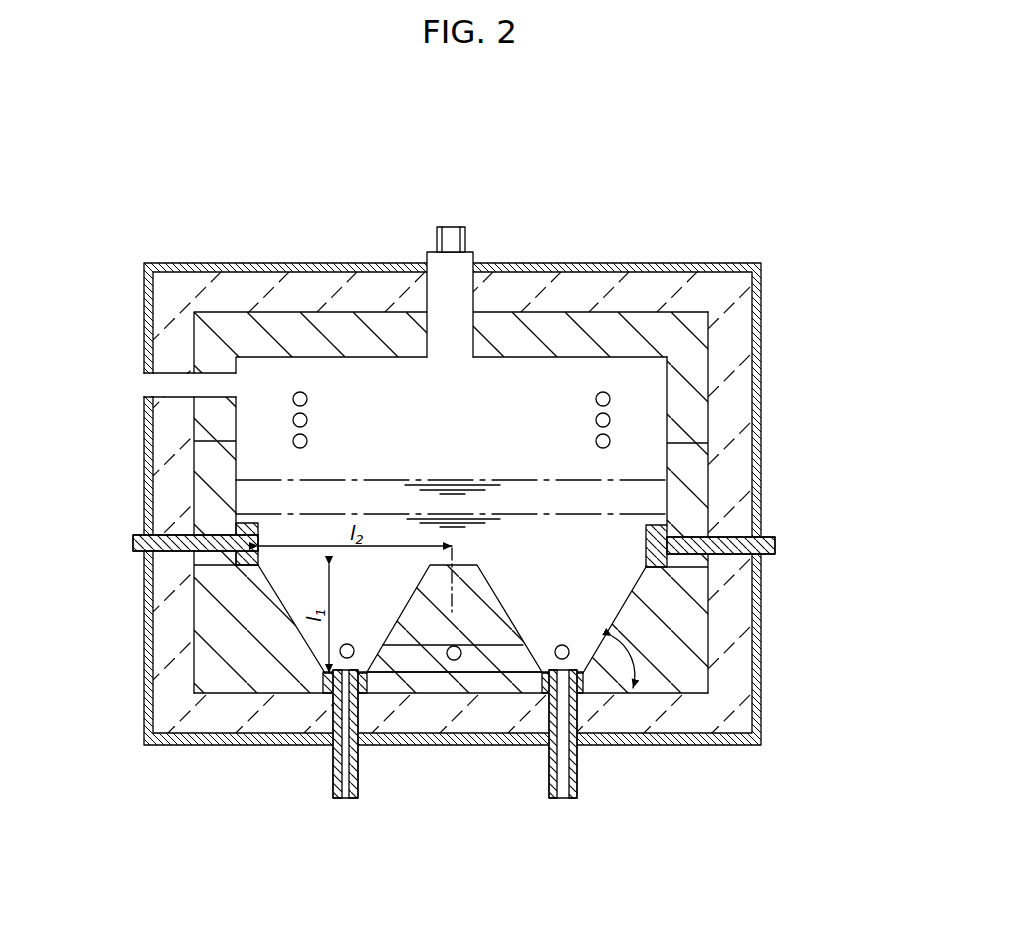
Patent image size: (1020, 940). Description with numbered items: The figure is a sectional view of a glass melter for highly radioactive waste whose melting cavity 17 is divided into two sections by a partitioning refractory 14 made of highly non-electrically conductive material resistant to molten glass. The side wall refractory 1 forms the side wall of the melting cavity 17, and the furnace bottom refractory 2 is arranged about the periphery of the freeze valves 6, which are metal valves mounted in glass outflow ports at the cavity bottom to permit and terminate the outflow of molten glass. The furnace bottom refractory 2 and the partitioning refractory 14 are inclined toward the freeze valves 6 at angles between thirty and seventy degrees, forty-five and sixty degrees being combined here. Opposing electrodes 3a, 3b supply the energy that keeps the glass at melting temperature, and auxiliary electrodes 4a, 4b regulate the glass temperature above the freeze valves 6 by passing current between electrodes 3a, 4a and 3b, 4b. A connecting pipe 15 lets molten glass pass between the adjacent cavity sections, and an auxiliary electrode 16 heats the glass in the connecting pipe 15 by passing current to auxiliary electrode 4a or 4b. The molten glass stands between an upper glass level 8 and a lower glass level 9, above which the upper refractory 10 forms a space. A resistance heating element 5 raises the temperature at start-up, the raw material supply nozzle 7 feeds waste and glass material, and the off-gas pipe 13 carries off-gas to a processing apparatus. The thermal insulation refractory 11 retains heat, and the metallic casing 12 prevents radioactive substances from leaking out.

The side wall refractory 1 is at (697, 503).
The furnace bottom refractory 2 is at (222, 667).
The electrode 3a is at (130, 535).
The electrode 3b is at (775, 540).
The auxiliary electrode 4a is at (340, 655).
The auxiliary electrode 4b is at (570, 655).
The resistance heating element 5 is at (293, 396).
The freeze valves 6 is at (332, 770).
The raw material supply nozzle 7 is at (462, 267).
The upper glass level 8 is at (608, 482).
The lower glass level 9 is at (617, 515).
The upper refractory 10 is at (697, 353).
The thermal insulation refractory 11 is at (742, 300).
The casing 12 is at (655, 267).
The off-gas pipe 13 is at (162, 388).
The partitioning refractory 14 is at (423, 627).
The connecting pipe 15 is at (388, 665).
The auxiliary electrode 16 is at (460, 662).
The melting cavity 17 is at (613, 593).